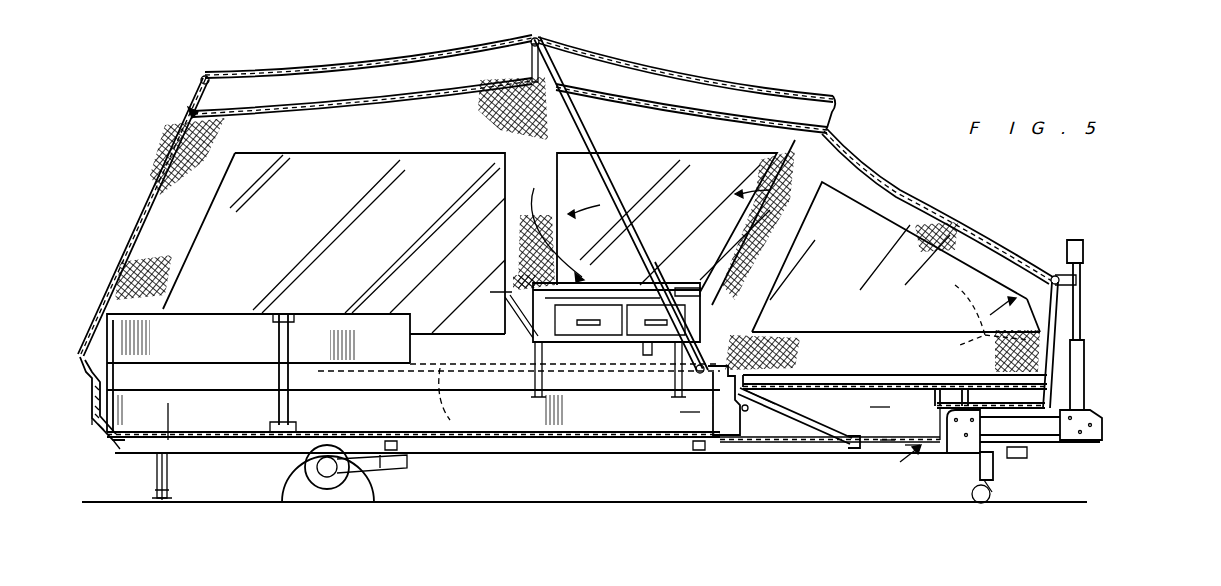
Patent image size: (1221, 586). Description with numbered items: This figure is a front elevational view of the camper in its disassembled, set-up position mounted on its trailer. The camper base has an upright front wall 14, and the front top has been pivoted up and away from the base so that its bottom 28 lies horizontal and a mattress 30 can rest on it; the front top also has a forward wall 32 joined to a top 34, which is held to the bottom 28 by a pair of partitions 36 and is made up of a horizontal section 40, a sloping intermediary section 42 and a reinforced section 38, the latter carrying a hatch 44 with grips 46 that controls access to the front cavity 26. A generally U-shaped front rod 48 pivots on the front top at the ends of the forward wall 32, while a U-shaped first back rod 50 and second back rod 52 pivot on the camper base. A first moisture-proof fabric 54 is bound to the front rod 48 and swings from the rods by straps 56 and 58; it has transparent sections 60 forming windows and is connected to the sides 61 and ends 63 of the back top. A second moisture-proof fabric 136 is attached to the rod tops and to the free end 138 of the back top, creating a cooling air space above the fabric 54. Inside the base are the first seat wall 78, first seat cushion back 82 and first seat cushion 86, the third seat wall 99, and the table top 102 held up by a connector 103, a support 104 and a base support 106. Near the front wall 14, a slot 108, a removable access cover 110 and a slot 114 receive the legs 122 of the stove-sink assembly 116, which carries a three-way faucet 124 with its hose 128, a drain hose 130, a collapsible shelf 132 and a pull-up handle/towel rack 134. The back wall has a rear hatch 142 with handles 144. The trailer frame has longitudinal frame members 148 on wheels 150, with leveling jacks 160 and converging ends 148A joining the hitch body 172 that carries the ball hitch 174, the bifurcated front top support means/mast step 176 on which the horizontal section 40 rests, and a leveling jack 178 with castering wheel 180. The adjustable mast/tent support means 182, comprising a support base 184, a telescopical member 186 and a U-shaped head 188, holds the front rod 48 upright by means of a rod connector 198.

The upright front wall 14 is at (722, 433).
The front cavity 26 is at (880, 407).
The bottom 28 is at (870, 438).
The mattress 30 is at (1047, 277).
The forward wall 32 is at (1060, 378).
The top 34 is at (913, 445).
The partitions 36 is at (935, 440).
The reinforced section 38 is at (883, 440).
The horizontal section 40 is at (1035, 447).
The intermediary section 42 is at (958, 388).
The hatch 44 is at (795, 428).
The grips 46 is at (765, 400).
The front rod 48 is at (972, 290).
The first back rod 50 is at (838, 142).
The second back rod 52 is at (586, 143).
The first moisture-proof fabric 54 is at (362, 100).
The strap 56 is at (837, 118).
The strap 58 is at (532, 38).
The transparent sections 60 is at (377, 261).
The sides 61 is at (170, 232).
The ends 63 is at (190, 111).
The first seat wall 78 is at (163, 502).
The first seat cushion back 82 is at (110, 445).
The first seat cushion 86 is at (150, 350).
The third seat wall 99 is at (888, 584).
The table top 102 is at (244, 313).
The connector 103 is at (290, 318).
The support 104 is at (287, 387).
The base support 106 is at (282, 422).
The slot 108 is at (545, 390).
The removable access cover 110 is at (618, 387).
The slot 114 is at (680, 412).
The stove-sink assembly 116 is at (644, 225).
The legs 122 is at (537, 350).
The three-way faucet 124 is at (683, 290).
The hose 128 is at (703, 360).
The drain hose 130 is at (643, 345).
The collapsible shelf 132 is at (510, 292).
The pull-up handle/towel rack 134 is at (578, 297).
The second moisture-proof fabric 136 is at (330, 62).
The free end 138 is at (208, 70).
The rear hatch 142 is at (95, 422).
The handles 144 is at (93, 378).
The longitudinal frame members 148 is at (507, 447).
The converging ends 148A is at (893, 447).
The wheels 150 is at (353, 490).
The leveling jacks 160 is at (155, 458).
The body 172 is at (987, 483).
The ball hitch 174 is at (1027, 450).
The front top support means/mast step 176 is at (965, 430).
The leveling jack 178 is at (977, 463).
The castering wheel 180 is at (990, 500).
The adjustable mast/tent support means 182 is at (1095, 357).
The support base 184 is at (1063, 430).
The telescopical member 186 is at (1085, 342).
The U-shaped head 188 is at (1083, 252).
The rod connector 198 is at (1083, 283).